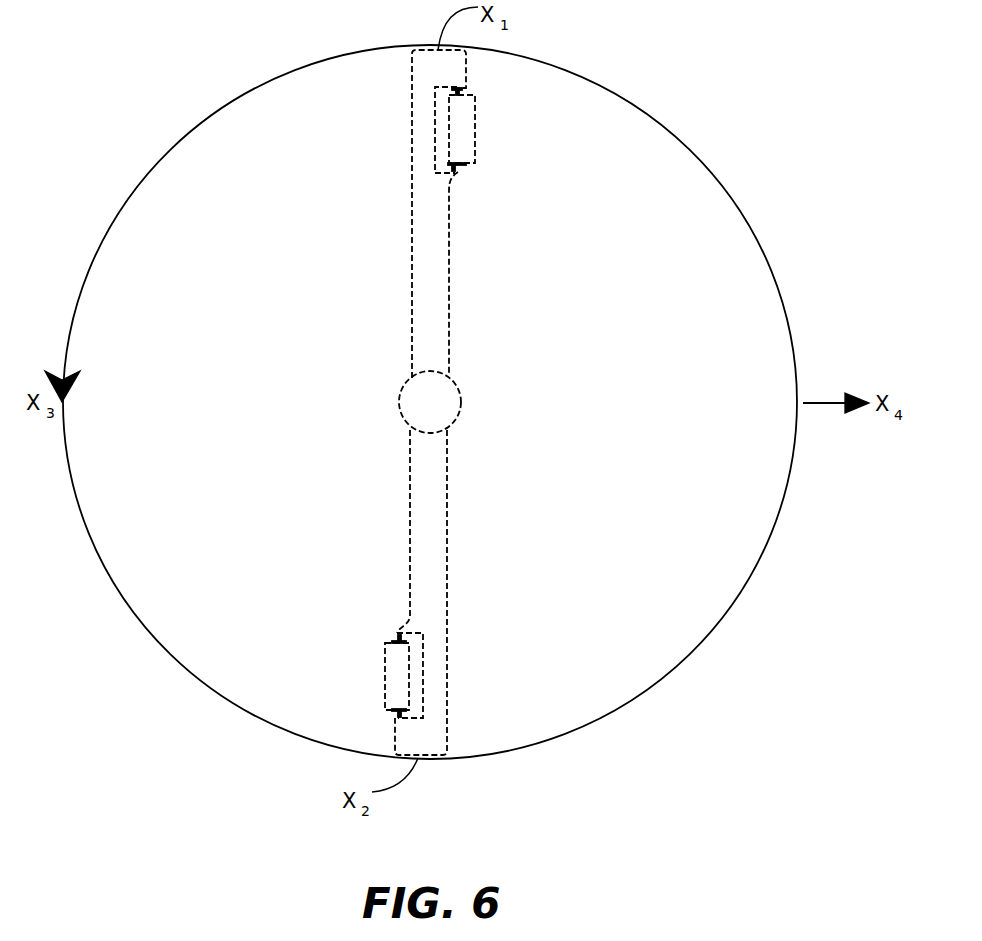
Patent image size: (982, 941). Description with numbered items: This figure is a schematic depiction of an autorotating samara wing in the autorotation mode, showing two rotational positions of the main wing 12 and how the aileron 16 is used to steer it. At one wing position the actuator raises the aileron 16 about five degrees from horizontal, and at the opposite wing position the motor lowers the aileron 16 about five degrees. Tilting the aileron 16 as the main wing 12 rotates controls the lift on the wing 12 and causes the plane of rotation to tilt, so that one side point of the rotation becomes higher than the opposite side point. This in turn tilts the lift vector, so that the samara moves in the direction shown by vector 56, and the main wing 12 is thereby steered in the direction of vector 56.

The wing 12 is at (430, 277).
The aileron 16 is at (470, 137).
The vector 56 is at (822, 403).